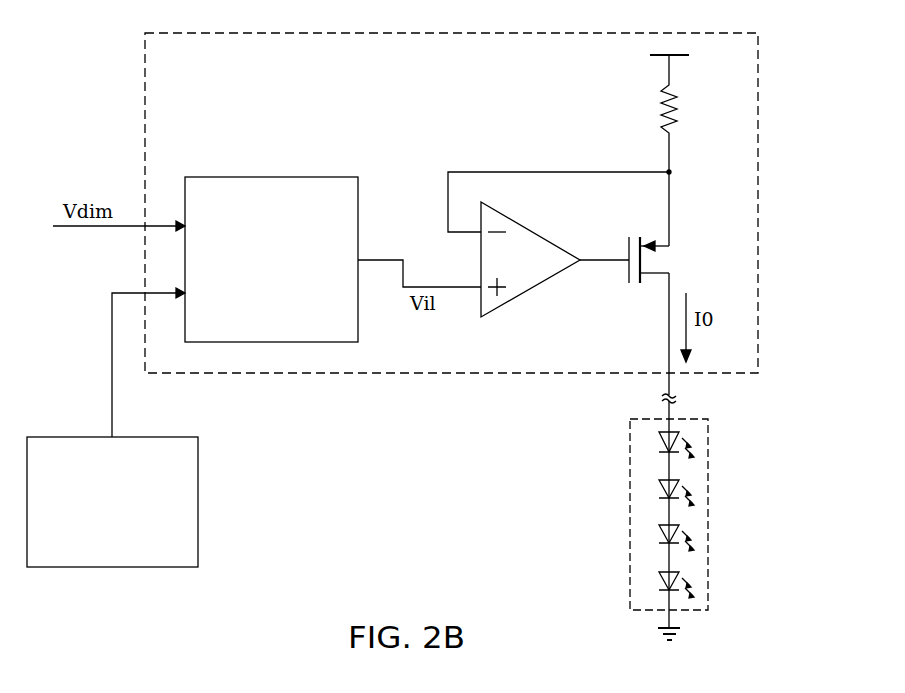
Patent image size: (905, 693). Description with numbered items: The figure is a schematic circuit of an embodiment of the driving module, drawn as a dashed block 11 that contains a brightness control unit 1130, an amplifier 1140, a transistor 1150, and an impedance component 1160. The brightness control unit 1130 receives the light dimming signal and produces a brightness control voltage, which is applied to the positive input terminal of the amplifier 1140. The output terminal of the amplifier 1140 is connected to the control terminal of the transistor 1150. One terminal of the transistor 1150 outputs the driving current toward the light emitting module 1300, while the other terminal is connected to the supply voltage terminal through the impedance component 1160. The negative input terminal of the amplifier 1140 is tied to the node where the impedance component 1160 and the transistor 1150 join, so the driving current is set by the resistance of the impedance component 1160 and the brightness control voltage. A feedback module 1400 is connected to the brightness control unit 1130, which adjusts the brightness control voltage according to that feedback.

The driving circuit 11 is at (760, 145).
The brightness control unit 1130 is at (247, 302).
The amplifier 1140 is at (527, 292).
The transistor 1150 is at (668, 260).
The impedance component 1160 is at (662, 110).
The light emitting module 1300 is at (709, 538).
The feedback module 1400 is at (87, 531).